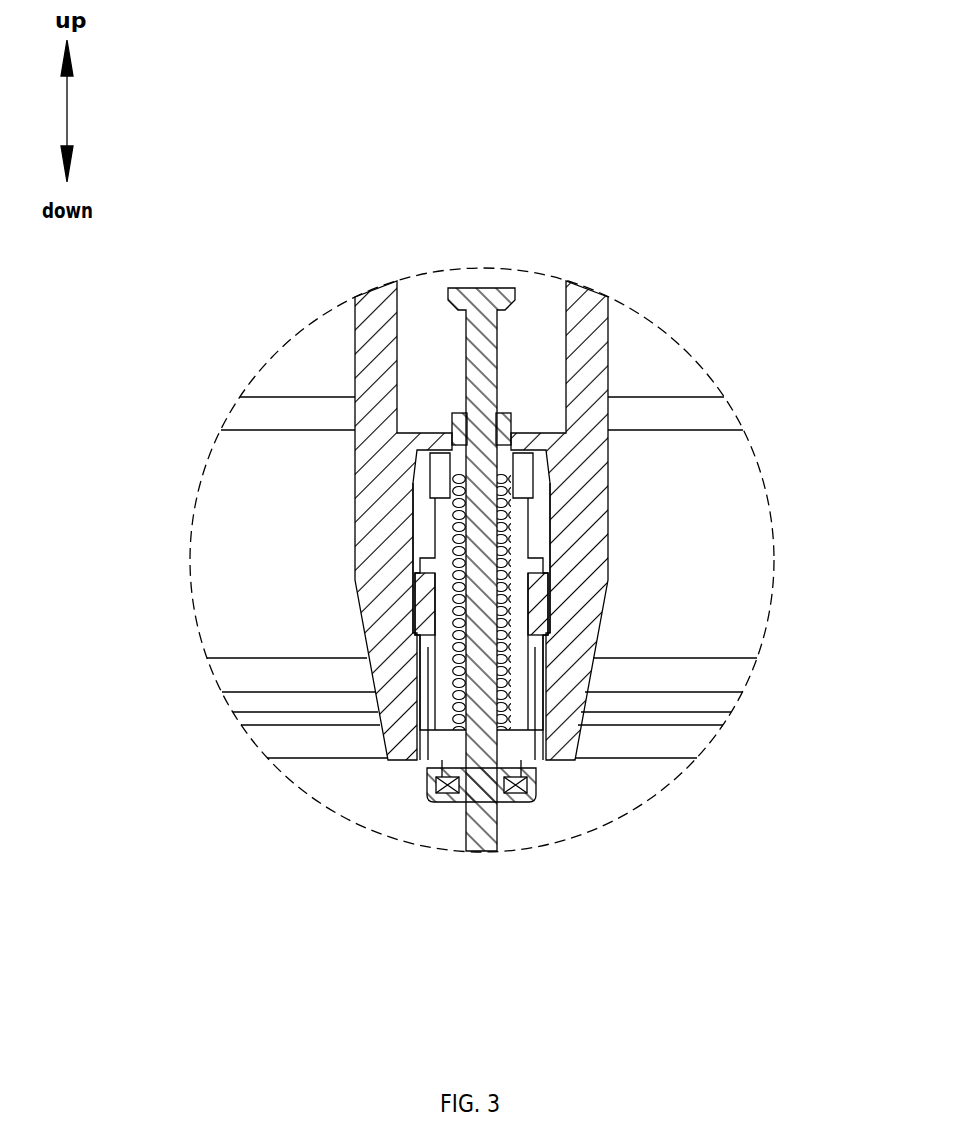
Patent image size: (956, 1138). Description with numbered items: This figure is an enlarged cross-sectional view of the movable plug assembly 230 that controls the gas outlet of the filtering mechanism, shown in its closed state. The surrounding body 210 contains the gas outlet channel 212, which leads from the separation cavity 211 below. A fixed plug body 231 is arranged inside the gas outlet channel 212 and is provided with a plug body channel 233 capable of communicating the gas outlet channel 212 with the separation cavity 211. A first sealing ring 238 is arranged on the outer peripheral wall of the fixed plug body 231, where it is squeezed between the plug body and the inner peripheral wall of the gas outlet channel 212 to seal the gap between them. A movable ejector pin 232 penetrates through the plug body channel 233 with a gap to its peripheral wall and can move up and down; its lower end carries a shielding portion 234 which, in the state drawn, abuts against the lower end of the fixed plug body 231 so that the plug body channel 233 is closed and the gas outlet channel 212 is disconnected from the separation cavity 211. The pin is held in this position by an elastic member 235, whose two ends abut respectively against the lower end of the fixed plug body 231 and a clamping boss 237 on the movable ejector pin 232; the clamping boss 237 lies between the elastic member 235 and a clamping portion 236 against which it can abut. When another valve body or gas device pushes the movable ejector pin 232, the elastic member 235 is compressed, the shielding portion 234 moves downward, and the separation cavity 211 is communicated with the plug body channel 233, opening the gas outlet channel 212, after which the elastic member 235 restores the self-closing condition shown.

The valve body 210 is at (552, 455).
The separation cavity 211 is at (350, 787).
The gas outlet channel 212 is at (440, 343).
The movable plug assembly 230 is at (437, 387).
The fixed plug body 231 is at (543, 673).
The movable ejector pin 232 is at (487, 310).
The plug body channel 233 is at (507, 545).
The shielding portion 234 is at (520, 802).
The elastic member 235 is at (515, 657).
The clamping portion 236 is at (455, 433).
The clamping boss 237 is at (430, 455).
The first sealing ring 238 is at (430, 650).